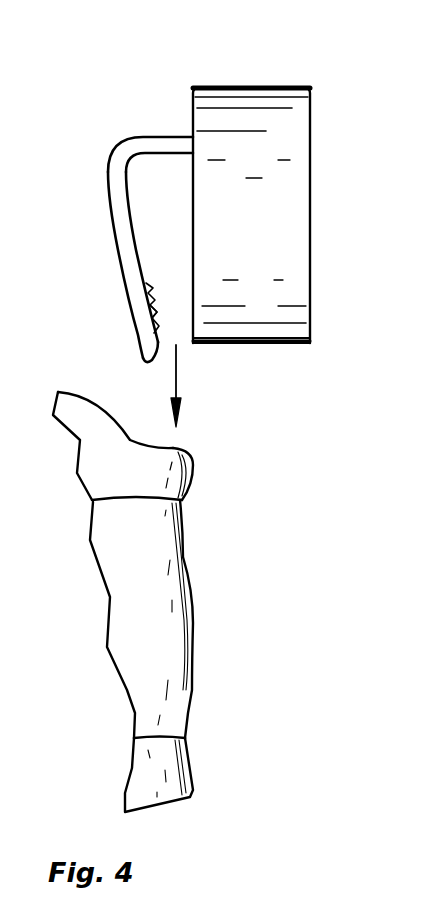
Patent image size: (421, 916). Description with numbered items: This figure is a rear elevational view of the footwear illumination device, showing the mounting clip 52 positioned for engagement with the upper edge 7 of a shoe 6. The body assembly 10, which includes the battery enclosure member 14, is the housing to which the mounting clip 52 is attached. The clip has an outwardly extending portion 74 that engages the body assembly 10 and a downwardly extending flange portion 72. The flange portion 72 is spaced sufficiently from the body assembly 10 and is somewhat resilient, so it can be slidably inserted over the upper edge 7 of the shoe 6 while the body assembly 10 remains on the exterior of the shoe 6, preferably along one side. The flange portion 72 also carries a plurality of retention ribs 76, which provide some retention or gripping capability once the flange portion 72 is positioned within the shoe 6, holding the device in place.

The body assembly 10 is at (292, 73).
The battery enclosure member 14 is at (311, 185).
The outwardly extending portion 74 is at (145, 134).
The mounting clip 52 is at (128, 256).
The flange portion 72 is at (150, 300).
The retention ribs 76 is at (160, 309).
The upper edge 7 is at (175, 450).
The shoe 6 is at (183, 550).